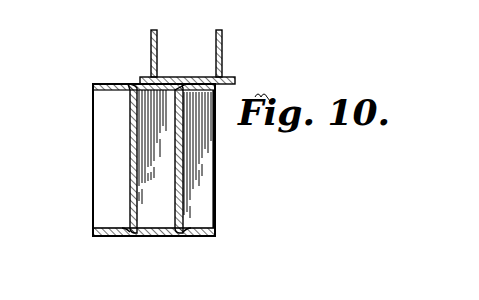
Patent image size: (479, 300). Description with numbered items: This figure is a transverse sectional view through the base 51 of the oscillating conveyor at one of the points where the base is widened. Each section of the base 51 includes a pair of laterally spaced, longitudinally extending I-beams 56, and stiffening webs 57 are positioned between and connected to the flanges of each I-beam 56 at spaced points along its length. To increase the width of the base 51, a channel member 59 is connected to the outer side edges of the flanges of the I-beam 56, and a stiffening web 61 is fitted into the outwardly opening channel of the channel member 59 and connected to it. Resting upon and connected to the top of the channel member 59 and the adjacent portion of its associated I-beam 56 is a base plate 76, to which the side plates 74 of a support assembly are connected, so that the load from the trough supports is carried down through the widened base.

The base 51 is at (91, 158).
The I-beam 56 is at (133, 188).
The stiffening web 57 is at (152, 110).
The channel member 59 is at (183, 180).
The stiffening web 61 is at (210, 208).
The side plate 74 is at (151, 50).
The base plate 76 is at (235, 79).